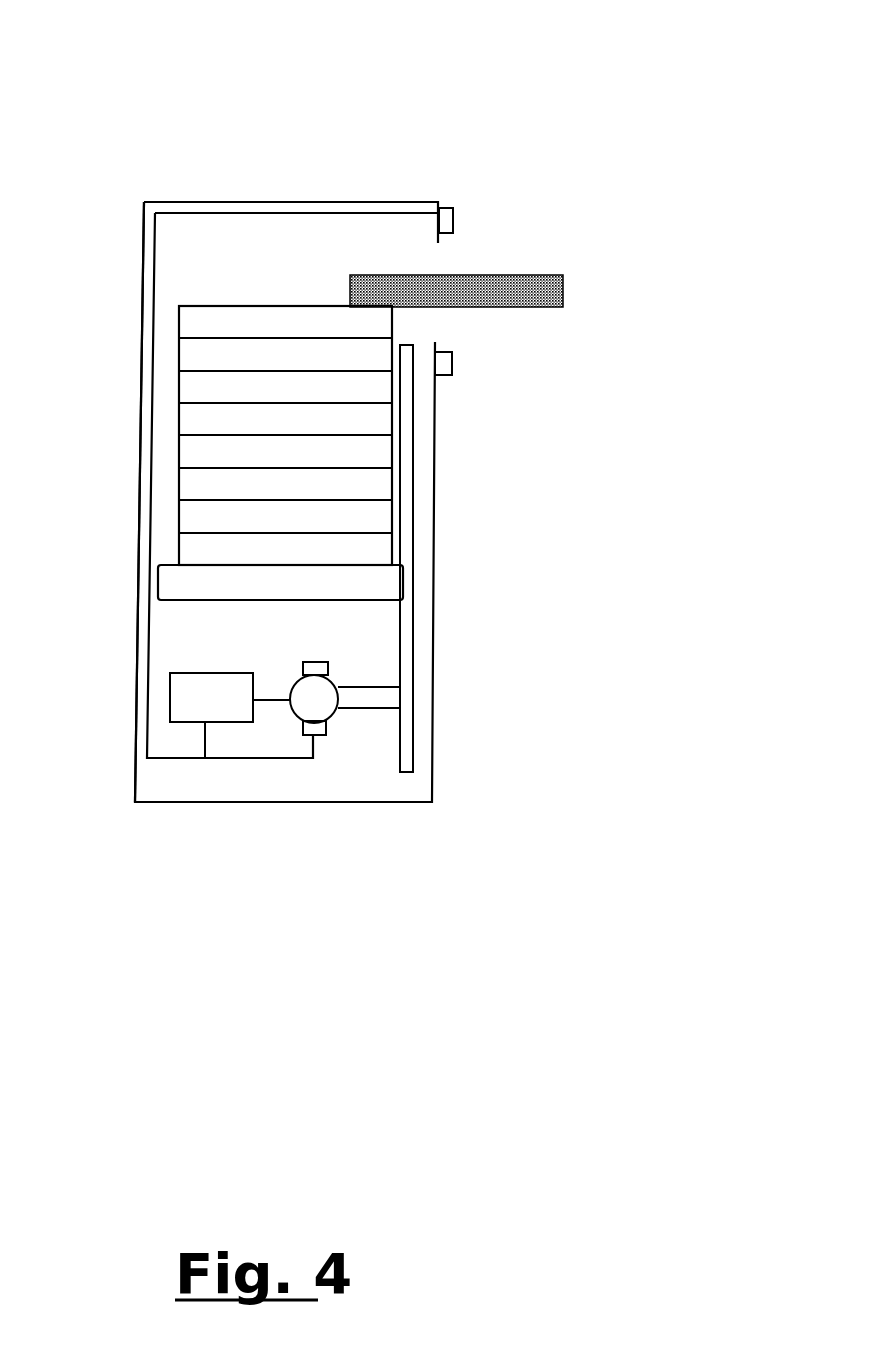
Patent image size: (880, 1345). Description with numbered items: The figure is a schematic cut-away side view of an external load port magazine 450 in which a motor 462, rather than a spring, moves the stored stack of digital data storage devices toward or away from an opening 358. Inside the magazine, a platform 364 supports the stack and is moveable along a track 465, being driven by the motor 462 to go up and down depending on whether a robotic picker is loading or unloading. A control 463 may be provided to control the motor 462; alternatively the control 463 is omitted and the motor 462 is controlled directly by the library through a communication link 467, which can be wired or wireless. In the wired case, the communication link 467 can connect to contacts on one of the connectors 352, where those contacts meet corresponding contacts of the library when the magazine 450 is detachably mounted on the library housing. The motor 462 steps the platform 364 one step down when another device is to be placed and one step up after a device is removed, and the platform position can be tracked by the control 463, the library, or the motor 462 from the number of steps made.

The external load port magazine 450 is at (101, 87).
The communication link 467 is at (150, 441).
The connector 352 is at (452, 210).
The opening 358 is at (460, 265).
The platform 364 is at (173, 582).
The track 465 is at (408, 637).
The control 463 is at (187, 702).
The motor 462 is at (320, 703).